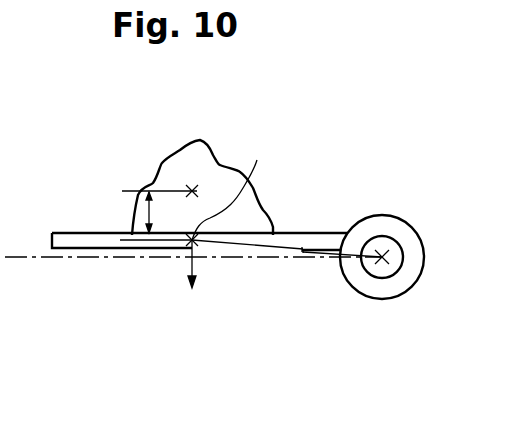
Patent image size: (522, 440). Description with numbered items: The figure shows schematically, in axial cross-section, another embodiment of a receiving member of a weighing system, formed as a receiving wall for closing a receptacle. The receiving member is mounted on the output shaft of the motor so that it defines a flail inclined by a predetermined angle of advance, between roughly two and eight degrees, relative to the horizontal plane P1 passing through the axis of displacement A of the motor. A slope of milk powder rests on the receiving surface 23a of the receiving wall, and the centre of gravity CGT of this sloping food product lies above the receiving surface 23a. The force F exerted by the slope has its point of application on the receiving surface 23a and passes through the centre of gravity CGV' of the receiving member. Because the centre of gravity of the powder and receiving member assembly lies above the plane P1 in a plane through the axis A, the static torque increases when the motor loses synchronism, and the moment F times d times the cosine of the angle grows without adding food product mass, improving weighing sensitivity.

The receiving surface 23a is at (90, 223).
The horizontal plane P1 is at (7, 257).
The axis of displacement A is at (386, 256).
The centre of gravity of the sloping food product CGT is at (196, 191).
The centre of gravity of the receiving member CGV' is at (244, 191).
The distance d is at (278, 246).
The force F is at (192, 267).